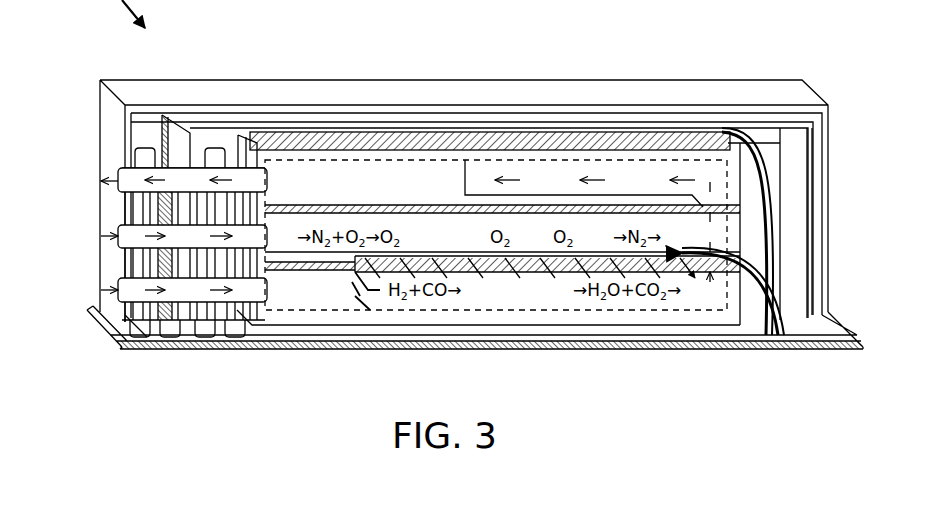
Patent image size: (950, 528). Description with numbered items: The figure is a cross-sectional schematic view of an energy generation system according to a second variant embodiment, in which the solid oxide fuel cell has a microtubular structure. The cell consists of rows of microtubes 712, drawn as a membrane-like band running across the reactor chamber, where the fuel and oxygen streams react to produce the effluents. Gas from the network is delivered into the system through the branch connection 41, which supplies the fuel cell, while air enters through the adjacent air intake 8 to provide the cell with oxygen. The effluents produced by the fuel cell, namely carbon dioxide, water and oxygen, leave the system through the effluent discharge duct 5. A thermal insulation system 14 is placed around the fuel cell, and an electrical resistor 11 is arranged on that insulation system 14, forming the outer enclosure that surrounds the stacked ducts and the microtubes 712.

The effluent discharge duct 5 is at (88, 181).
The air inlet pipe 8 is at (88, 236).
The branch connection 41 is at (88, 290).
The electrical resistor 11 is at (701, 135).
The thermal insulation system 14 is at (257, 145).
The microtubes 712 is at (552, 264).